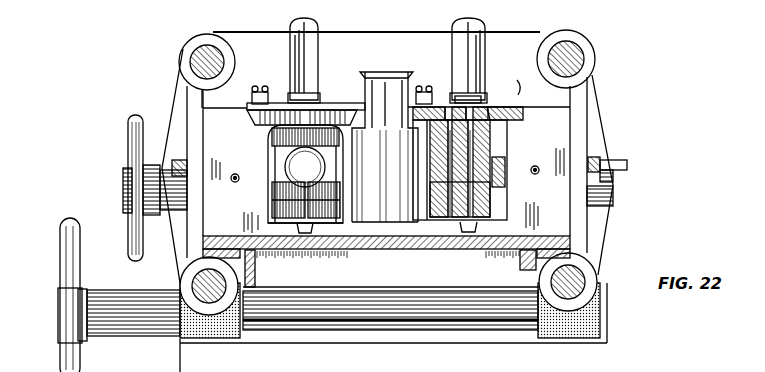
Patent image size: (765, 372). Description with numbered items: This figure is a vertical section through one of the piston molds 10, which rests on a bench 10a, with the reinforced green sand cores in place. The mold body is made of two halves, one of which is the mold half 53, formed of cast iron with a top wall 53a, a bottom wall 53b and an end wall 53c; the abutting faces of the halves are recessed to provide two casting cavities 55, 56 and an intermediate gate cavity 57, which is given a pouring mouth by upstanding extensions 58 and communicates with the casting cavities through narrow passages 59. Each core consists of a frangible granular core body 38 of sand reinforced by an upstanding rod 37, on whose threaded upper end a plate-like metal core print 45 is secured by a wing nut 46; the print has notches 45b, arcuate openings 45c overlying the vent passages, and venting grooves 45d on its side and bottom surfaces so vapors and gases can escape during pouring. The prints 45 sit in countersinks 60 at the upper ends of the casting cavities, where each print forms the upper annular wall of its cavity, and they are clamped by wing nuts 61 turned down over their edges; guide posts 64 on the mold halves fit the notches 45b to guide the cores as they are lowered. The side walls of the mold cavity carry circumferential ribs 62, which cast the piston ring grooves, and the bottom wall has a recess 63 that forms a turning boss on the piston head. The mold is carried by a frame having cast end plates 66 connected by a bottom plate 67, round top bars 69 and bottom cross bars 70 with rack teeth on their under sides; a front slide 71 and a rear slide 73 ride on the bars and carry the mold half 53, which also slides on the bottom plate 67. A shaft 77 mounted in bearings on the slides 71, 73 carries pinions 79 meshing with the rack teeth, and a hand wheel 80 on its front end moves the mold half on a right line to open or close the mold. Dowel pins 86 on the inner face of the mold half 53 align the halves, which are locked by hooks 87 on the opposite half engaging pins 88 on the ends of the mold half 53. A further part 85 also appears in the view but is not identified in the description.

The mold 10 is at (170, 102).
The bench 10a is at (607, 340).
The upstanding rod 37 is at (505, 162).
The frangible granular core body 38 is at (330, 217).
The core print 45 is at (250, 92).
The notches 45b is at (290, 150).
The arcuate openings 45c is at (508, 86).
The venting grooves 45d is at (335, 100).
The wing nut 46 is at (486, 80).
The mold half 53 is at (557, 219).
The top wall 53a is at (552, 107).
The bottom wall 53b is at (570, 229).
The end wall 53c is at (570, 147).
The casting cavity 55 is at (268, 150).
The casting cavity 56 is at (568, 155).
The gate cavity 57 is at (385, 147).
The upstanding extensions 58 is at (410, 74).
The narrow passages 59 is at (413, 172).
The countersink 60 is at (247, 113).
The wing nuts 61 is at (264, 89).
The circumferential ribs 62 is at (268, 213).
The recess 63 is at (296, 231).
The guide posts 64 is at (313, 42).
The end plates 66 is at (268, 32).
The bottom plate 67 is at (392, 249).
The top bars 69 is at (198, 57).
The bottom cross bars 70 is at (180, 281).
The slide 71 is at (172, 83).
The slide 73 is at (591, 78).
The shaft 77 is at (372, 330).
The pinions 79 is at (203, 333).
The hand wheel 80 is at (62, 249).
The lever 85 is at (129, 140).
The dowel pins 86 is at (232, 181).
The hooks 87 is at (180, 165).
The pins 88 is at (122, 186).